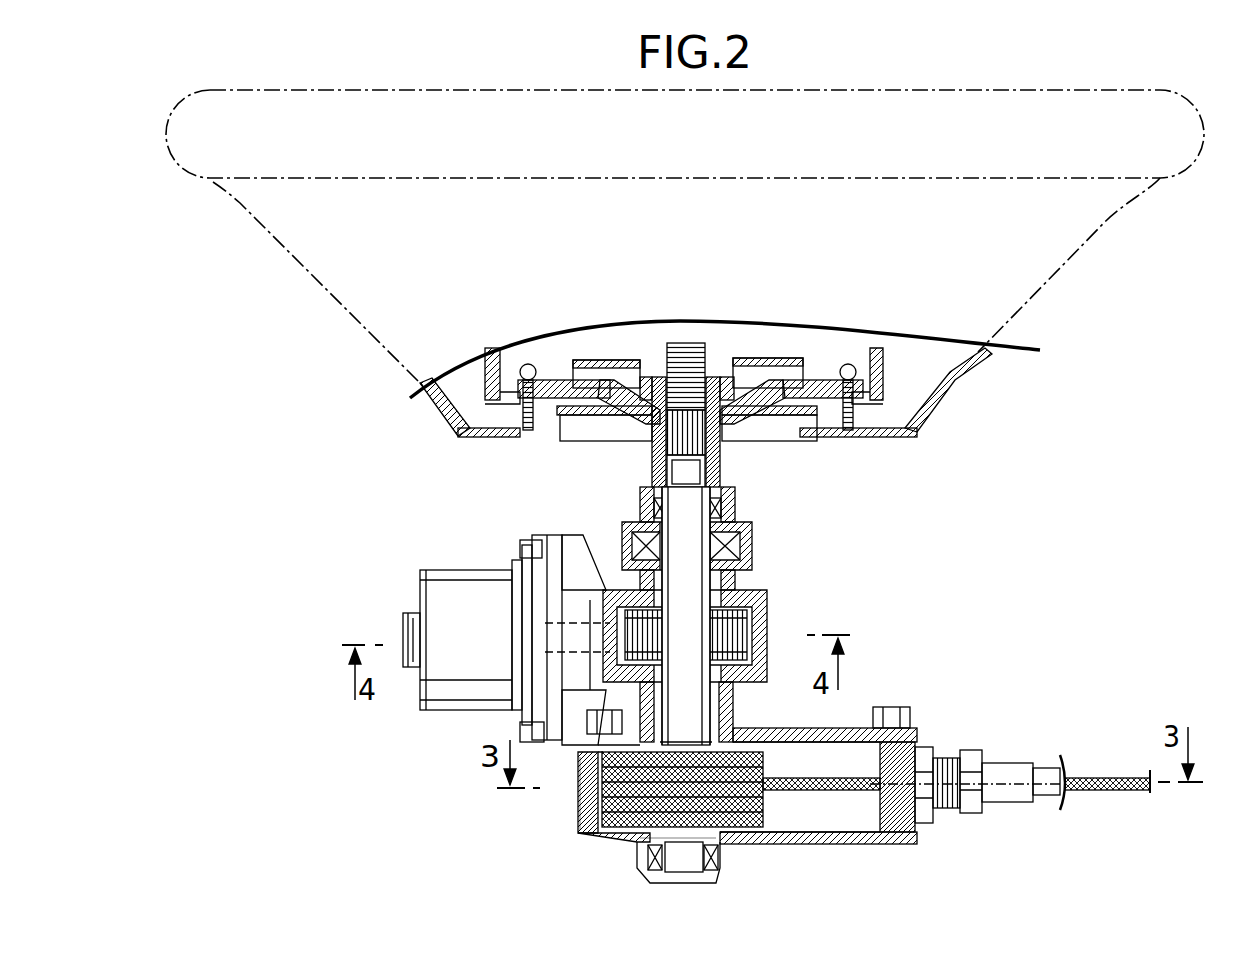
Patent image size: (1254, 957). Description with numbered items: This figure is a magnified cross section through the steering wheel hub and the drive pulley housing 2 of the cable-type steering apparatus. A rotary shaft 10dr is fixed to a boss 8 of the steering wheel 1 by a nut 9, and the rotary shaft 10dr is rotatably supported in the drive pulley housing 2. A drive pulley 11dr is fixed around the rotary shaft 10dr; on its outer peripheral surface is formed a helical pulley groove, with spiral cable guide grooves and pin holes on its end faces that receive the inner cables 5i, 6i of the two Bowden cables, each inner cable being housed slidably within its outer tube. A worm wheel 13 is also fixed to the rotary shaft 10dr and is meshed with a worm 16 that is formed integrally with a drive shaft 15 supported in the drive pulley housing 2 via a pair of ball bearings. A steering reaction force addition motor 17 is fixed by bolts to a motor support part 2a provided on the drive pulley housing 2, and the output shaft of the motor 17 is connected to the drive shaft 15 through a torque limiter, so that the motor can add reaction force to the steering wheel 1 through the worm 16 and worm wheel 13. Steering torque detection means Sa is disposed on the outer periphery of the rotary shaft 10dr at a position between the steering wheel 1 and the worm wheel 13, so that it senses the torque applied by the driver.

The steering wheel 1 is at (350, 303).
The drive pulley housing 2 is at (762, 842).
The motor support part 2a is at (572, 560).
The inner cable 5i is at (596, 757).
The inner cable 6i is at (583, 847).
The boss 8 is at (650, 456).
The nut 9 is at (717, 363).
The rotary shaft 10dr is at (717, 468).
The drive pulley 11dr is at (620, 834).
The worm wheel 13 is at (762, 606).
The drive shaft 15 is at (585, 655).
The worm 16 is at (690, 656).
The steering reaction force addition motor 17 is at (465, 588).
The steering torque detection means Sa is at (735, 548).